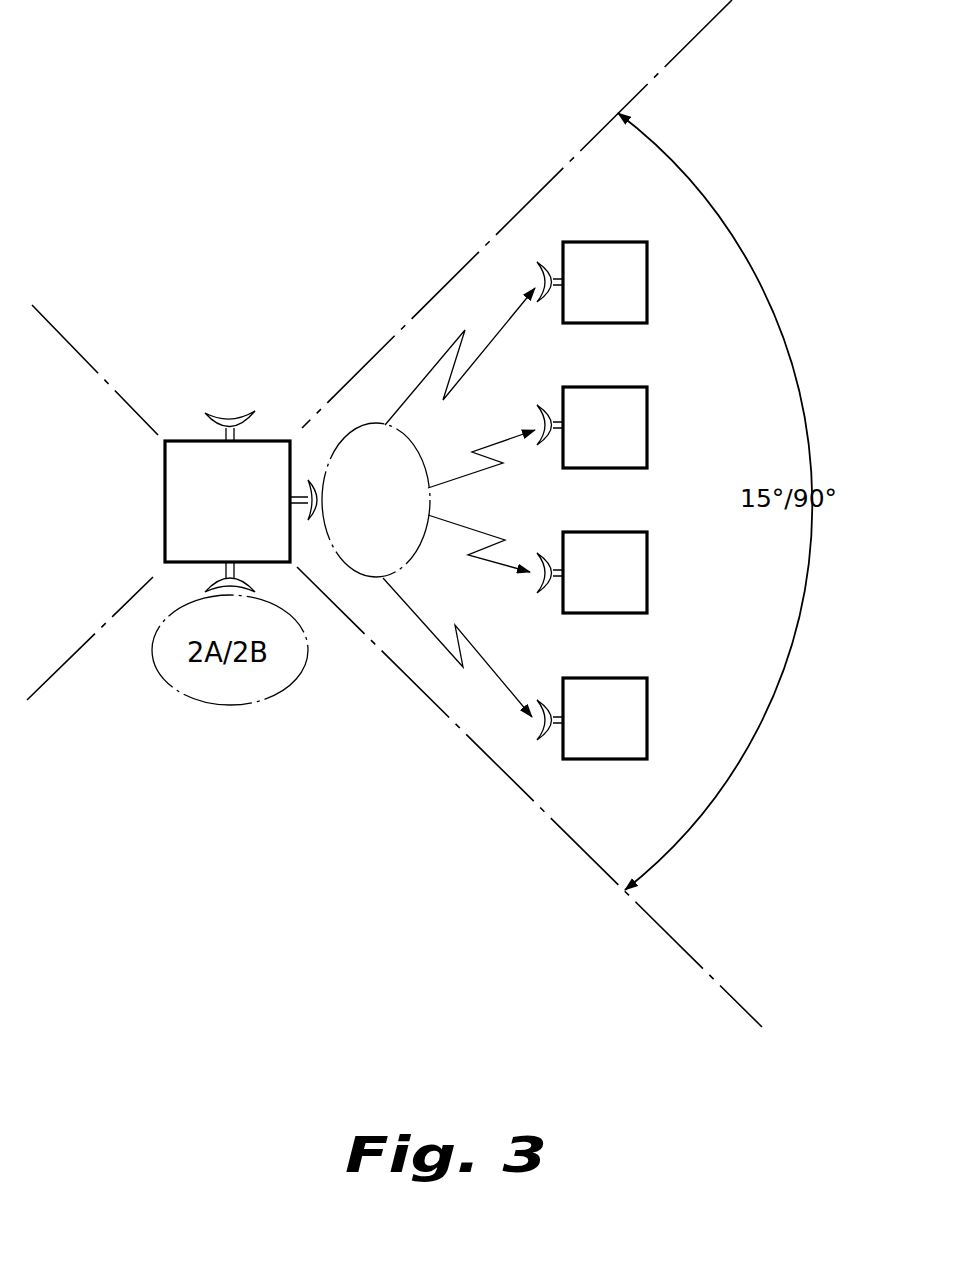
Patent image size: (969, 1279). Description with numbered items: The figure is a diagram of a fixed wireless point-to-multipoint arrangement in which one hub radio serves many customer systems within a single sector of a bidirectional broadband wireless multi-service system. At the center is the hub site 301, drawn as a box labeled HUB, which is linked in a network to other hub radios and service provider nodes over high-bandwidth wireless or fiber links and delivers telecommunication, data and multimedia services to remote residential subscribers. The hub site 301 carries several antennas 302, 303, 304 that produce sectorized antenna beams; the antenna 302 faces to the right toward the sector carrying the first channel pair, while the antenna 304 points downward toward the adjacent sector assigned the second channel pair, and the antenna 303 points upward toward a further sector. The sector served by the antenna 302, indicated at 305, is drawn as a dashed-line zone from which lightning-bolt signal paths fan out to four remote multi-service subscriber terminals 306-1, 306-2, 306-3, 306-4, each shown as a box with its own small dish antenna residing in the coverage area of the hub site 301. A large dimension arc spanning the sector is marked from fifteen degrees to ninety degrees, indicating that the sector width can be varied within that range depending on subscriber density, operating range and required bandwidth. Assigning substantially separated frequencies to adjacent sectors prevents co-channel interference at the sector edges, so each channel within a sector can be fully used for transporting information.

The hub site 301 is at (148, 510).
The antenna 302 is at (313, 493).
The antenna 303 is at (222, 428).
The antenna 304 is at (220, 572).
The sector 1A/1B coverage area 305 is at (411, 570).
The remote multi-service subscriber terminal 306-1 is at (640, 323).
The remote multi-service subscriber terminal 306-2 is at (636, 468).
The remote multi-service subscriber terminal 306-3 is at (640, 613).
The remote multi-service subscriber terminal 306-4 is at (636, 759).